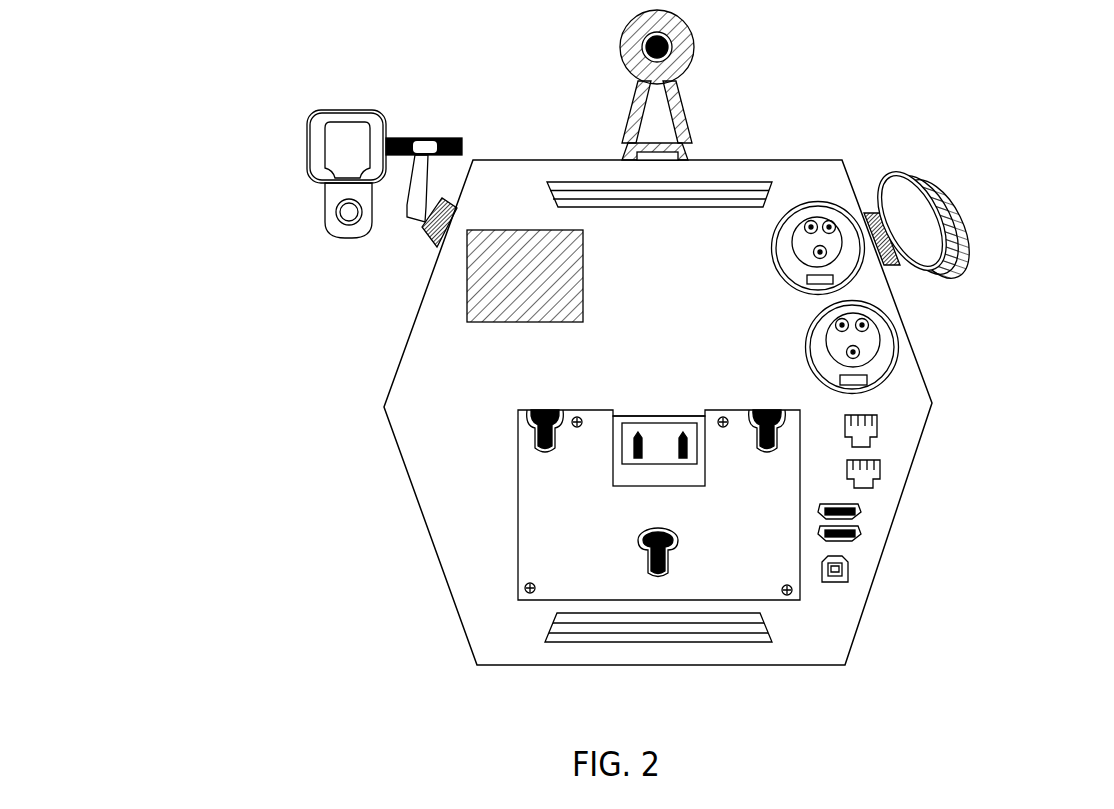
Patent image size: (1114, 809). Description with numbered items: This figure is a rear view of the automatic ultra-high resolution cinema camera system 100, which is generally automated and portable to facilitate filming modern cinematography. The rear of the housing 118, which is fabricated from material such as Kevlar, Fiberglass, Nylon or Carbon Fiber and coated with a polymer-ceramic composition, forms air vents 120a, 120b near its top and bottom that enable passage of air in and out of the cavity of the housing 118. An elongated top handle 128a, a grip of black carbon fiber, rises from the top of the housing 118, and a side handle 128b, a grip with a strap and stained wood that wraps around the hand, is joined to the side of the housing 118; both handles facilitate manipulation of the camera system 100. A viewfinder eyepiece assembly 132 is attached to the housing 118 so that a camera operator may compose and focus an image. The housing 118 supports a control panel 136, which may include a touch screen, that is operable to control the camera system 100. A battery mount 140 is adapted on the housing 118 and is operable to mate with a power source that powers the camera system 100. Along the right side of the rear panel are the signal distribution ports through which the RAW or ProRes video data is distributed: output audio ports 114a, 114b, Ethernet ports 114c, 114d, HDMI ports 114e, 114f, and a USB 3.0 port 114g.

The ultra-high resolution cinema camera system 100 is at (146, 82).
The output audio port 114a is at (788, 257).
The output audio port 114b is at (817, 348).
The Ethernet port 114c is at (878, 425).
The Ethernet port 114d is at (872, 472).
The HDMI port 114e is at (861, 507).
The HDMI port 114f is at (861, 529).
The USB 3.0 port 114g is at (848, 567).
The housing 118 is at (430, 512).
The air vent 120a is at (744, 182).
The air vent 120b is at (552, 637).
The top handle 128a is at (695, 48).
The side handle 128b is at (975, 208).
The viewfinder eyepiece assembly 132 is at (351, 108).
The control panel 136 is at (541, 283).
The battery mount 140 is at (581, 516).